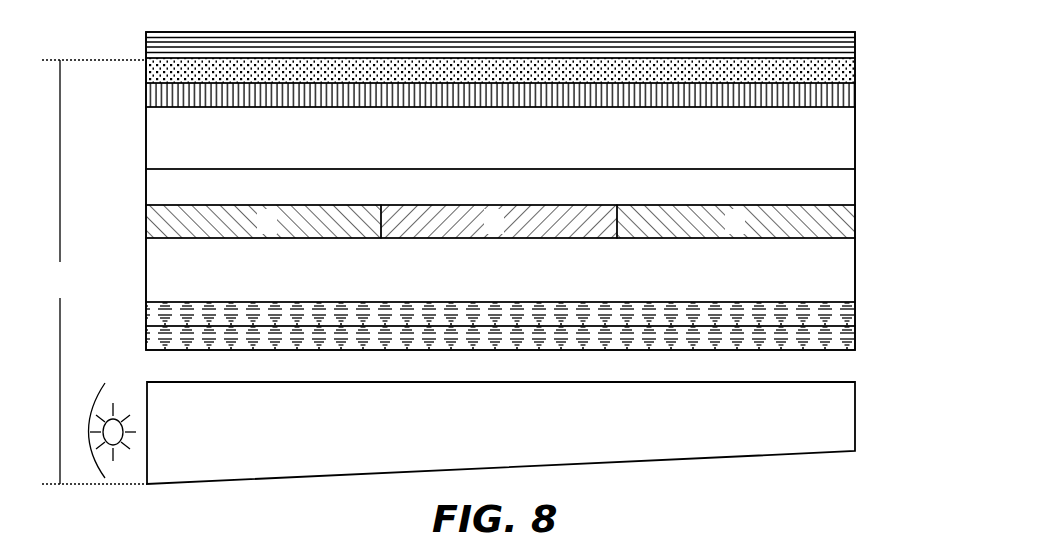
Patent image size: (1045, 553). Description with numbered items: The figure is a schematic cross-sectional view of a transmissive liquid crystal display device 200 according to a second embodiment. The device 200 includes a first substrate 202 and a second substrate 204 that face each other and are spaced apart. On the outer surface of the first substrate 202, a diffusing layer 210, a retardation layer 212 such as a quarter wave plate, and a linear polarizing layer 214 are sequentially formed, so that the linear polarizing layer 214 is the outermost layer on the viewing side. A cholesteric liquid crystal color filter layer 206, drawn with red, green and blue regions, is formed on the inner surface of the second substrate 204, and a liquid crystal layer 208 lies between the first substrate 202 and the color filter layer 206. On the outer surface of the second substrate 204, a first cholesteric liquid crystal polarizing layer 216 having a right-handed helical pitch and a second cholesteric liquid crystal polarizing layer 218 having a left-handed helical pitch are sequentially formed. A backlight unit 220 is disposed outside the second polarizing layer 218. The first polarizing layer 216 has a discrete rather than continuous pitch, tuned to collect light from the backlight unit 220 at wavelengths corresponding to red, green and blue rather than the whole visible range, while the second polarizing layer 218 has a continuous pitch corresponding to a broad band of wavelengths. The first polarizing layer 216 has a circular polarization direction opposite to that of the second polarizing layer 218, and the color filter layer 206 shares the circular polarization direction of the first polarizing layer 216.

The transmissive liquid crystal display device 200 is at (94, 272).
The first substrate 202 is at (857, 141).
The second substrate 204 is at (857, 274).
The cholesteric liquid crystal color filter layer 206 is at (857, 223).
The liquid crystal layer 208 is at (857, 188).
The diffusing layer 210 is at (857, 97).
The retardation layer 212 is at (857, 68).
The linear polarizing layer 214 is at (857, 41).
The first cholesteric liquid crystal polarizing layer 216 is at (857, 312).
The second cholesteric liquid crystal polarizing layer 218 is at (857, 340).
The backlight unit 220 is at (857, 423).